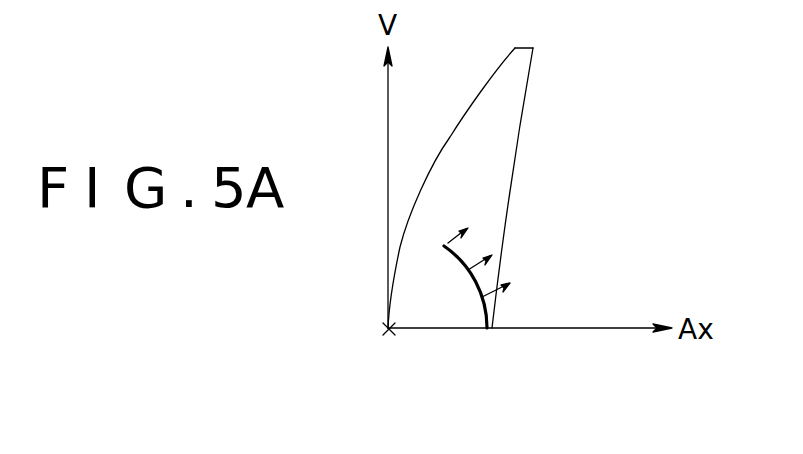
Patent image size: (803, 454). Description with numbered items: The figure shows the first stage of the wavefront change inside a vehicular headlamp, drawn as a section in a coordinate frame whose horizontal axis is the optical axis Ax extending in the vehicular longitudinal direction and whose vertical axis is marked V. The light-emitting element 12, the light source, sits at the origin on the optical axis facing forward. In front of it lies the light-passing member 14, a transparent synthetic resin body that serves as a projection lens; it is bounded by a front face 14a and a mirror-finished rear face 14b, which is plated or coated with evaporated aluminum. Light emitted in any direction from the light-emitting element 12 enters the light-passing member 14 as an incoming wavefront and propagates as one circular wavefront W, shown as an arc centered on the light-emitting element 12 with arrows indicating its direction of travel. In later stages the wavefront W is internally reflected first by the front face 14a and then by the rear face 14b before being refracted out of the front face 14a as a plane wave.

The light-emitting element 12 is at (389, 335).
The light-passing member 14 is at (503, 172).
The front face 14a is at (530, 88).
The rear face 14b is at (438, 157).
The wavefront W is at (462, 268).